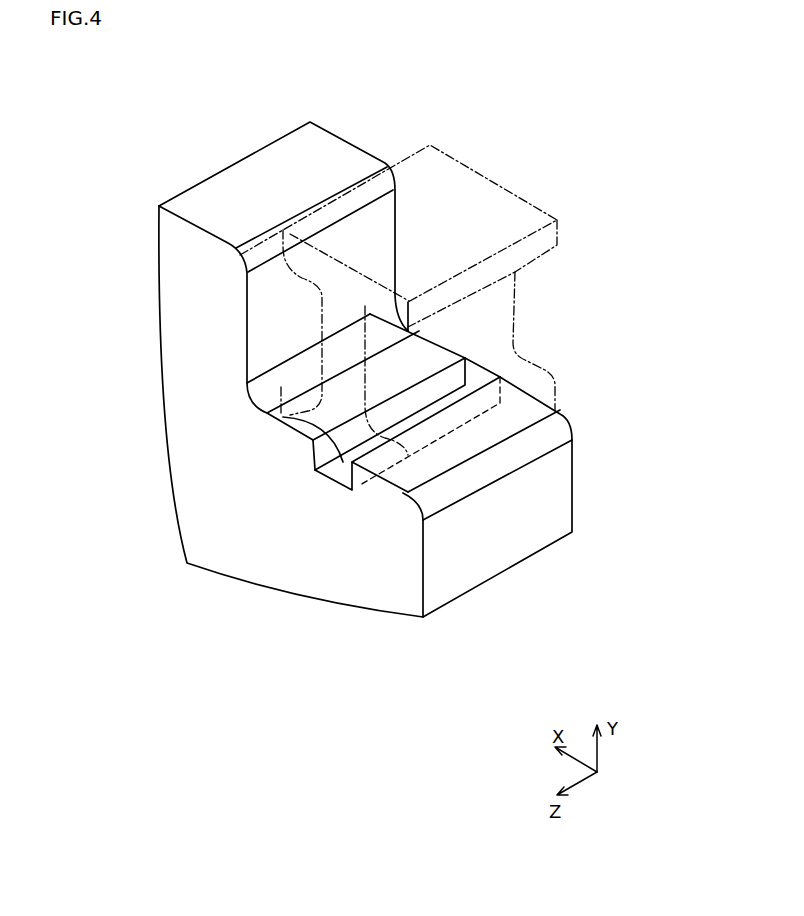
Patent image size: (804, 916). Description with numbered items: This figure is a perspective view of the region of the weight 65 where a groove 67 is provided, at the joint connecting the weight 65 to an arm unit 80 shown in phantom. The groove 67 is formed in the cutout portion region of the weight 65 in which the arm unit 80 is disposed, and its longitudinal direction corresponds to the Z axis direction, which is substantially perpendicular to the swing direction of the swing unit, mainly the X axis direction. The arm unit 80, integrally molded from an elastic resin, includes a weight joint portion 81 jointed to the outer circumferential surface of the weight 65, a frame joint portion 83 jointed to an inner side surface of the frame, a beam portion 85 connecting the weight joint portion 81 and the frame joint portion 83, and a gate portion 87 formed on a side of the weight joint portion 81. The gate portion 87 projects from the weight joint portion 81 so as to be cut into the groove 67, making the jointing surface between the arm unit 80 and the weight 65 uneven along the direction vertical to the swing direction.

The weight 65 is at (197, 323).
The grooves 67 is at (313, 435).
The arm unit 80 is at (449, 361).
The weight joint portion 81 is at (540, 383).
The frame joint portion 83 is at (430, 220).
The beam portion 85 is at (330, 323).
The gate portion 87 is at (312, 475).